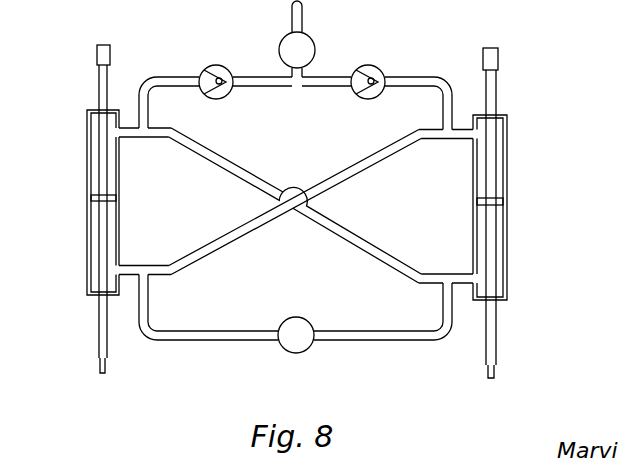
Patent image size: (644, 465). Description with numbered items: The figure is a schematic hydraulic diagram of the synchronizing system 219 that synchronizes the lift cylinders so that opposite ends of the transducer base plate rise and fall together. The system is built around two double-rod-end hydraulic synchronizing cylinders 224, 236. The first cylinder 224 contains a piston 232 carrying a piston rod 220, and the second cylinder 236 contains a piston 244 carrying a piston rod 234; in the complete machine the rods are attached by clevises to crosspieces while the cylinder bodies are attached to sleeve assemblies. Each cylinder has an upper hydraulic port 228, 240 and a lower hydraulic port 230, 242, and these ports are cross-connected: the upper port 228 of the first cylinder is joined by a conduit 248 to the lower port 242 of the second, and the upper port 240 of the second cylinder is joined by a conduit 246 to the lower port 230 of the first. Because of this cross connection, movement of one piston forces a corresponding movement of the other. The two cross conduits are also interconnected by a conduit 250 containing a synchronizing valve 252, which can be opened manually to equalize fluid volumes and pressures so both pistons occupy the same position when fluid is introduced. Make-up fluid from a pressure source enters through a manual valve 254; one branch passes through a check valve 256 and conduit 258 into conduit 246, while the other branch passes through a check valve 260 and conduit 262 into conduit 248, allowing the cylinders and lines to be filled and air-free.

The hydraulic synchronizing system 219 is at (92, 34).
The piston rod 220 is at (98, 82).
The synchronizing cylinder 224 is at (87, 168).
The upper hydraulic port 228 is at (123, 138).
The lower hydraulic port 230 is at (118, 265).
The piston 232 is at (91, 198).
The piston rod 234 is at (496, 85).
The synchronizing cylinder 236 is at (508, 163).
The upper hydraulic port 240 is at (472, 140).
The lower hydraulic port 242 is at (472, 270).
The piston 244 is at (503, 202).
The conduit 246 is at (345, 183).
The conduit 248 is at (242, 180).
The conduit 250 is at (233, 342).
The synchronizing valve 252 is at (298, 353).
The manual valve 254 is at (310, 38).
The check valve 256 is at (380, 70).
The conduit 258 is at (443, 107).
The check valve 260 is at (206, 68).
The conduit 262 is at (153, 100).